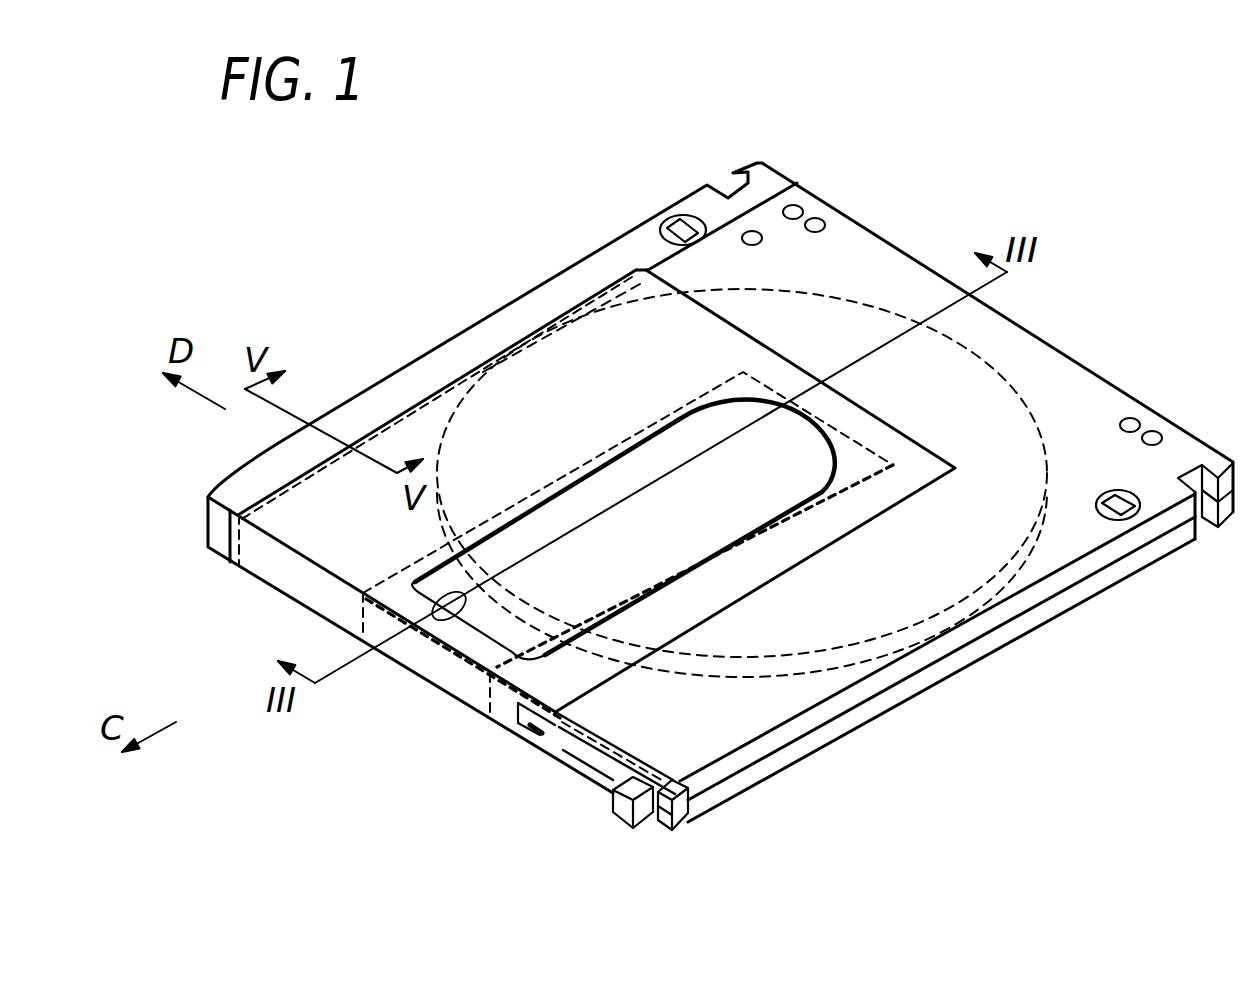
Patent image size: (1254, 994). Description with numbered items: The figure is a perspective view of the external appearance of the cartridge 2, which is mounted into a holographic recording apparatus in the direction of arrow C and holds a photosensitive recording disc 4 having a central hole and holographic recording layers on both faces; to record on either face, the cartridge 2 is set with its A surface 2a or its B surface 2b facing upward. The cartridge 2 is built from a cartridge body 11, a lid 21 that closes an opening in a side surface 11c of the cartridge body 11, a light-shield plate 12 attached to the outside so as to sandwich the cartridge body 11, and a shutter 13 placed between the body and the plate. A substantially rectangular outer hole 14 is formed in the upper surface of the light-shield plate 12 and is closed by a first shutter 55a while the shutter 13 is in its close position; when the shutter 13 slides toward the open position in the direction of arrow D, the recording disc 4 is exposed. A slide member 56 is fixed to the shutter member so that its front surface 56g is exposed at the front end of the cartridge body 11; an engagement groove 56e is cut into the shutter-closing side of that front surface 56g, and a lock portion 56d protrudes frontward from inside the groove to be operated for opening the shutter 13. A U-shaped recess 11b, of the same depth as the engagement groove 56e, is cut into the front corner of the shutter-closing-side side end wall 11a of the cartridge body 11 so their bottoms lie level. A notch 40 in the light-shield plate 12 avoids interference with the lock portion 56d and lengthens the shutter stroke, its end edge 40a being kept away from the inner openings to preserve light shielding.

The cartridge 2 is at (817, 180).
The A surface 2a is at (1100, 594).
The B surface 2b is at (1110, 404).
The recording disc 4 is at (892, 308).
The cartridge body 11 is at (862, 216).
The shutter-closing-side side end wall 11a is at (927, 682).
The recess 11b is at (697, 810).
The side surface 11c is at (673, 288).
The light-shield plate 12 is at (660, 230).
The shutter 13 is at (340, 608).
The outer hole 14 is at (445, 614).
The lid 21 is at (507, 309).
The notch 40 is at (527, 727).
The end edge 40a is at (565, 708).
The first shutter 55a is at (813, 445).
The slide member 56 is at (597, 767).
The lock portion 56d is at (632, 812).
The engagement groove 56e is at (655, 822).
The front surface 56g is at (580, 747).